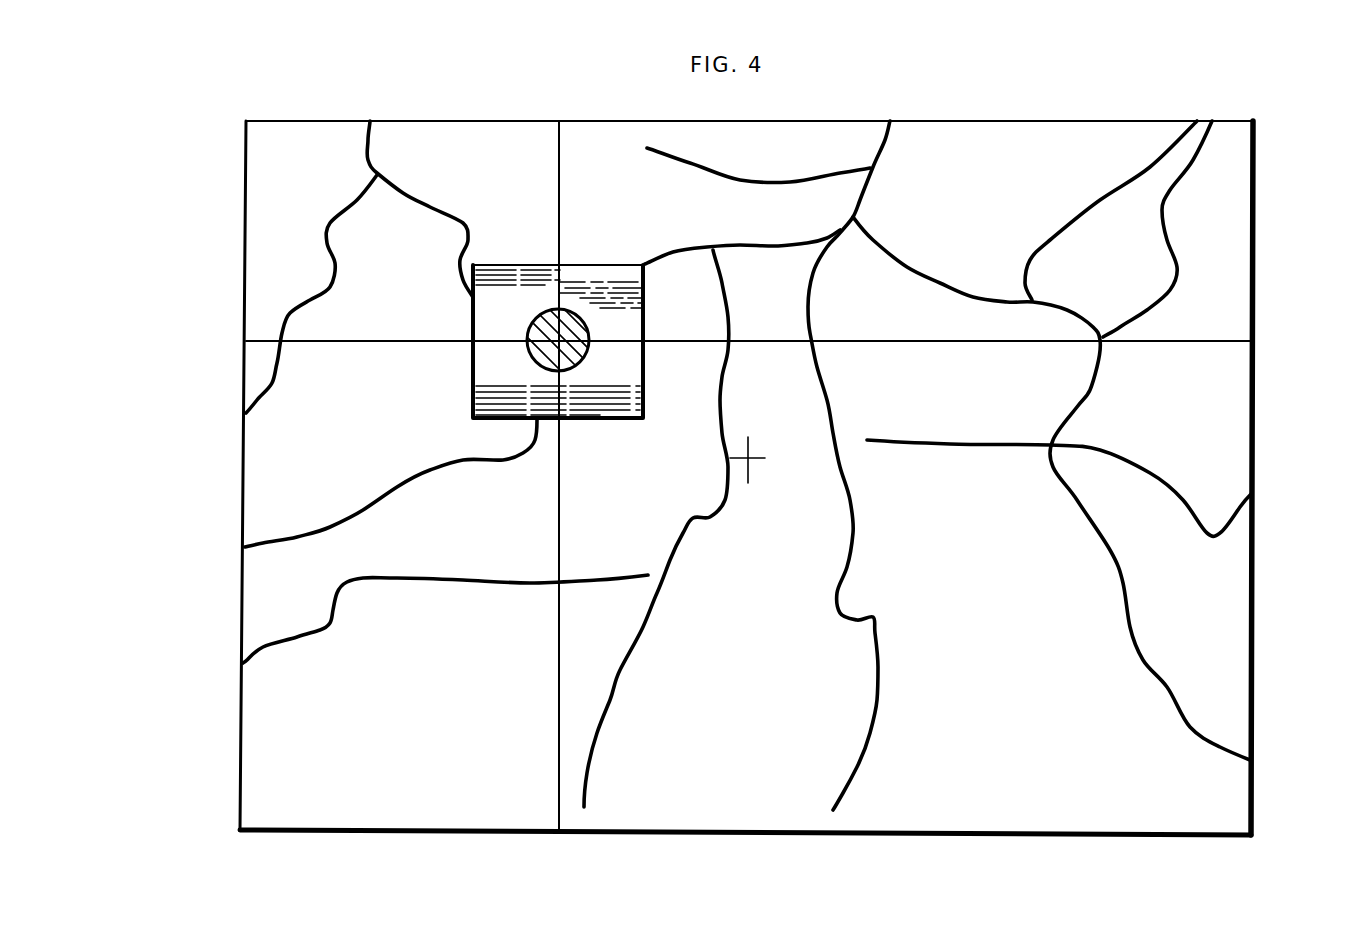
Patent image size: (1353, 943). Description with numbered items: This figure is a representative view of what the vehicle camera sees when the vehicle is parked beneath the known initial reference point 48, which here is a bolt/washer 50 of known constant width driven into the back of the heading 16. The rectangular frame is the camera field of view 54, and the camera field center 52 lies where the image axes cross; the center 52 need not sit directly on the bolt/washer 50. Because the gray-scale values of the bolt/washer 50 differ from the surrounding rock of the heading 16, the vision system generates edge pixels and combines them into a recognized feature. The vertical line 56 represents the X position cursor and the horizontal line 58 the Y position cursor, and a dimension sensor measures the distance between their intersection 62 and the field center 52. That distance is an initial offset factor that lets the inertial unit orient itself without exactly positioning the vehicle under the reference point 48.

The heading 16 is at (243, 503).
The known initial reference point 48 is at (623, 388).
The bolt/washer 50 is at (526, 354).
The camera field of view center 52 is at (750, 466).
The field of view 54 is at (503, 789).
The vertical line 56 is at (560, 168).
The horizontal line 58 is at (1196, 342).
The intersection of the horizontal and vertical axes 62 is at (563, 338).